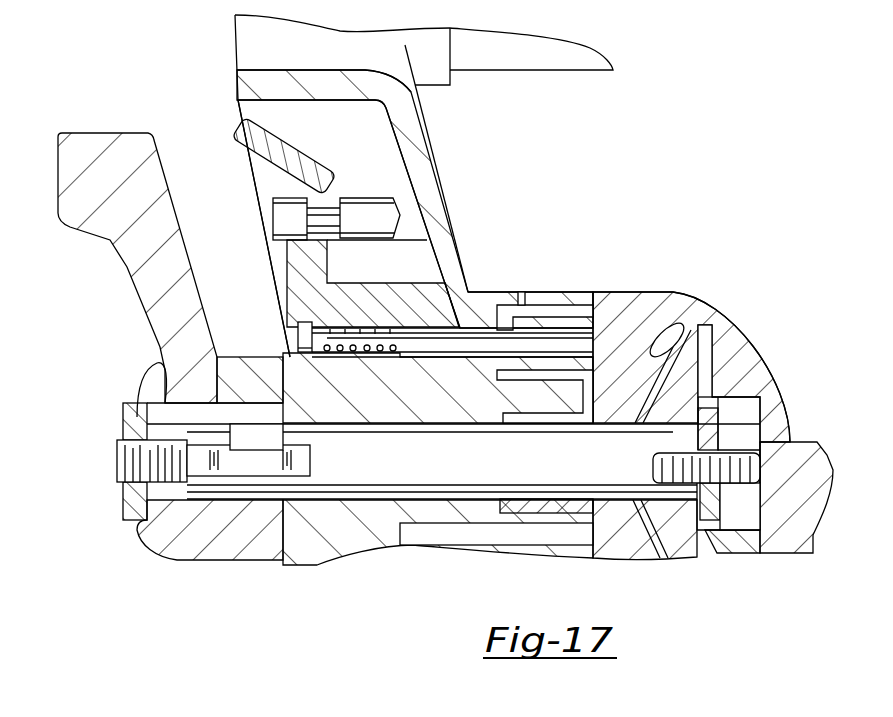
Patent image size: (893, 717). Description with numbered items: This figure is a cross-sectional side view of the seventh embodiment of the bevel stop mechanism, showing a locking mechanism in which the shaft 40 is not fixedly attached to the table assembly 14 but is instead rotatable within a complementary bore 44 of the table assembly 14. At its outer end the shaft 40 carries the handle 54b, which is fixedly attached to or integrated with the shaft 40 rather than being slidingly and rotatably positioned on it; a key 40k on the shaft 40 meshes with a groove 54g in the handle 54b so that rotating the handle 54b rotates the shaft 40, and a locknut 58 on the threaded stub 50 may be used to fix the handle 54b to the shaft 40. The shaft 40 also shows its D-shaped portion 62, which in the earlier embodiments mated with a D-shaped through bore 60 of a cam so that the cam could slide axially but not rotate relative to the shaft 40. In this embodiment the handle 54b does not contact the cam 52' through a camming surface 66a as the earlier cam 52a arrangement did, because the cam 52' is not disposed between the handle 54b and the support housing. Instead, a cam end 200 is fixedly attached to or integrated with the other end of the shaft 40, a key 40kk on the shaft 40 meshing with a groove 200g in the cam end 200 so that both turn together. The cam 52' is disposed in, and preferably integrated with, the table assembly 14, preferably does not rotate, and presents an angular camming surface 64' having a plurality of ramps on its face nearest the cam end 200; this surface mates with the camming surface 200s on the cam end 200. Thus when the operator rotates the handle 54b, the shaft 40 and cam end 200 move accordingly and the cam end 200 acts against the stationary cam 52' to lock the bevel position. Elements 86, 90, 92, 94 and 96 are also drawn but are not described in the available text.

The table assembly 14 is at (737, 360).
The shaft 40 is at (487, 473).
The key 40k is at (160, 417).
The key 40kk is at (673, 422).
The bore 44 is at (578, 427).
The threaded stub 50 is at (130, 450).
The cam 52a is at (267, 357).
The cam 52' is at (726, 381).
The handle 54b is at (133, 147).
The groove 54g is at (226, 357).
The locknut 58 is at (123, 407).
The D-shaped through bore 60 is at (270, 432).
The D-shaped portion 62 is at (255, 470).
The angular camming surface 64' is at (659, 327).
The camming surface 66a is at (287, 395).
The lever 86 is at (262, 118).
The lever housing 90 is at (470, 330).
The pin 92 is at (352, 337).
The retainer 94 is at (297, 325).
The adjustment knob 96 is at (373, 203).
The cam end 200 is at (722, 342).
The camming surface 200s is at (708, 323).
The groove 200g is at (687, 418).